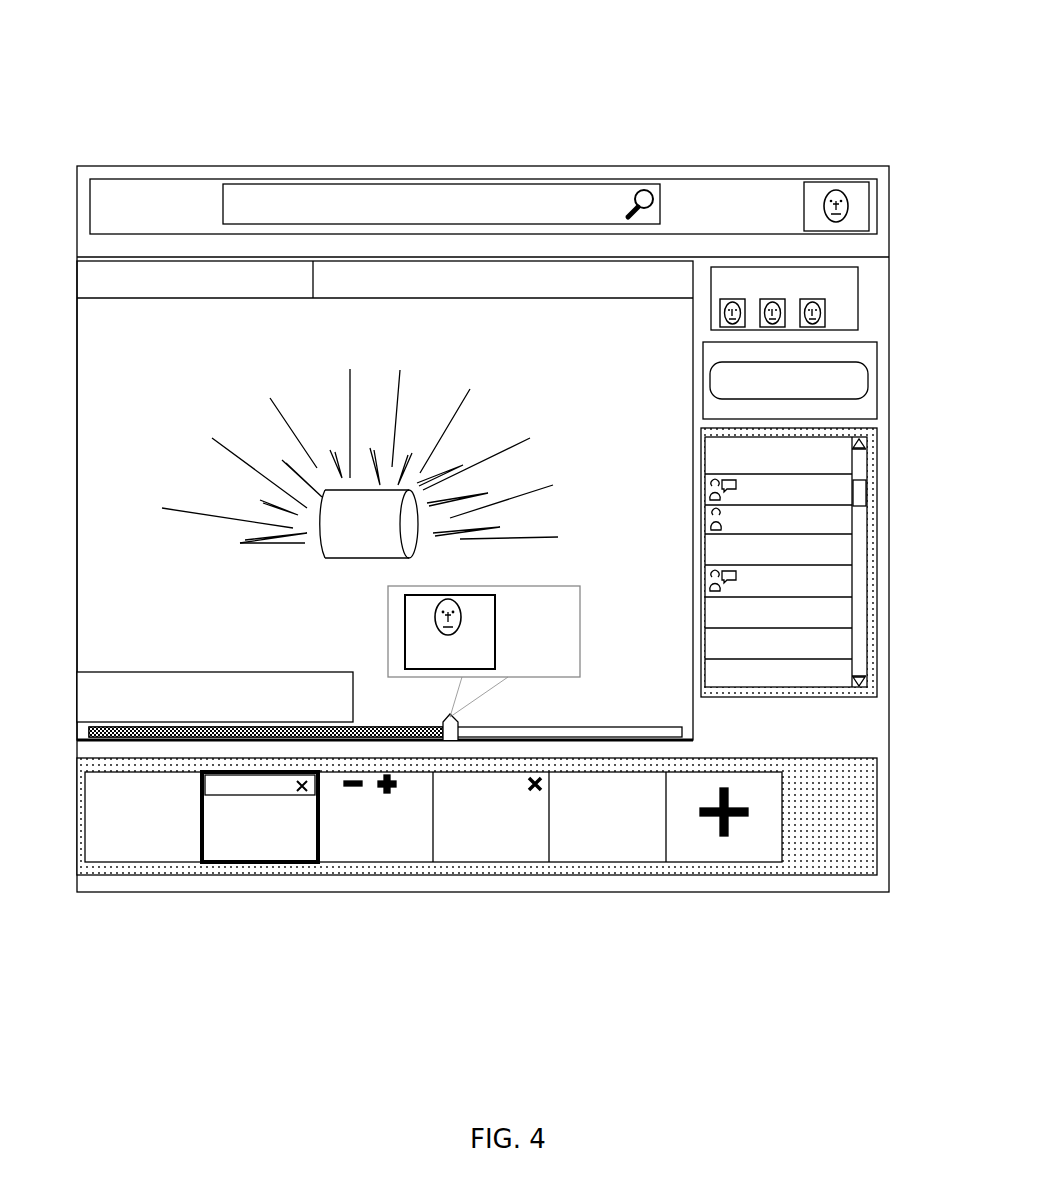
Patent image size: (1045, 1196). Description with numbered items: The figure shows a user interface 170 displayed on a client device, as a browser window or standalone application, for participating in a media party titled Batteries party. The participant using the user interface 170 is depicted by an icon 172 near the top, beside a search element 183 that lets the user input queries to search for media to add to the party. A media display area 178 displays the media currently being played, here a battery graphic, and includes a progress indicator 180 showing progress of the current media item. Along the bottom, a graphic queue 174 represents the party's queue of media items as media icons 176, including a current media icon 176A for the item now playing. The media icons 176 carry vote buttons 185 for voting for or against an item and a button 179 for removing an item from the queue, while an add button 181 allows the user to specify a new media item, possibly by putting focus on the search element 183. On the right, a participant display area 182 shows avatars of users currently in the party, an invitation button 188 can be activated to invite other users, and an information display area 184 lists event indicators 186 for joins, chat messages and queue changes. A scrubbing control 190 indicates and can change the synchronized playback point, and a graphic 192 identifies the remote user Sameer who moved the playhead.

The user interface 170 is at (138, 166).
The icon 172 is at (805, 182).
The graphic queue 174 is at (172, 875).
The media icons 176 is at (590, 847).
The current media icon 176A is at (260, 825).
The media display area 178 is at (440, 352).
The button 179 is at (535, 792).
The progress indicator 180 is at (412, 738).
The add button 181 is at (723, 847).
The participant display area 182 is at (738, 268).
The search element 183 is at (365, 180).
The information display area 184 is at (808, 697).
The vote buttons 185 is at (387, 792).
The event indicators 186 is at (828, 677).
The invitation button 188 is at (743, 362).
The scrubbing control 190 is at (453, 735).
The graphic 192 is at (560, 677).